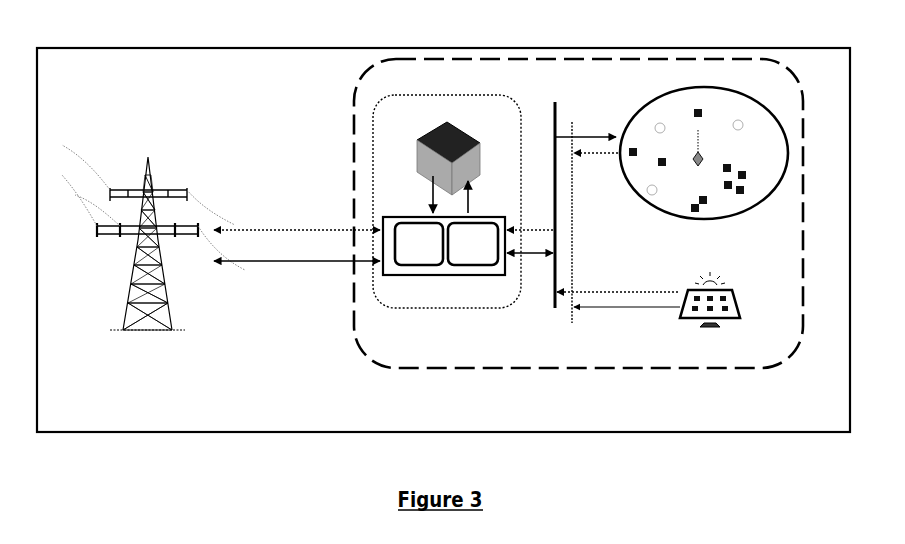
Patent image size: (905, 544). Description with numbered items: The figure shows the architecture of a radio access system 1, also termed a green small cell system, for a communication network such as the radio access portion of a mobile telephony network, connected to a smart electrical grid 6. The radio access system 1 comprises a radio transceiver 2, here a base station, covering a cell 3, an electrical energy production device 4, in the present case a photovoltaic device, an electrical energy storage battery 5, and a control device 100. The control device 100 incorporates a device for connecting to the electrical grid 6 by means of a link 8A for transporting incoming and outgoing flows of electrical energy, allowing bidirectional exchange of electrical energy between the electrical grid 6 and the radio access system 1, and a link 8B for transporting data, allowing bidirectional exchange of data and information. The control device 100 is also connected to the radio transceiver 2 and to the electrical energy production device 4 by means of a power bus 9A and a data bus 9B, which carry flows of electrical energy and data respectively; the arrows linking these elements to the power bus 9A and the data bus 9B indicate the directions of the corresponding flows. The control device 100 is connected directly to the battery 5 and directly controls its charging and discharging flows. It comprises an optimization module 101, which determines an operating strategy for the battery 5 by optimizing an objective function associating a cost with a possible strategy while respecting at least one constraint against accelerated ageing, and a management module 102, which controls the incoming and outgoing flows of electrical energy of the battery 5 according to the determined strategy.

The radio access system 1 is at (358, 343).
The radio transceiver 2 is at (693, 164).
The cell 3 is at (740, 215).
The electrical energy production device 4 is at (727, 303).
The electrical energy storage battery 5 is at (457, 127).
The smart electrical grid 6 is at (157, 300).
The link for transporting flows of electrical energy 8A is at (287, 260).
The link for transporting data 8B is at (315, 227).
The power bus 9A is at (556, 205).
The data bus 9B is at (573, 168).
The control device 100 is at (444, 283).
The optimization module 101 is at (419, 244).
The management module 102 is at (473, 244).